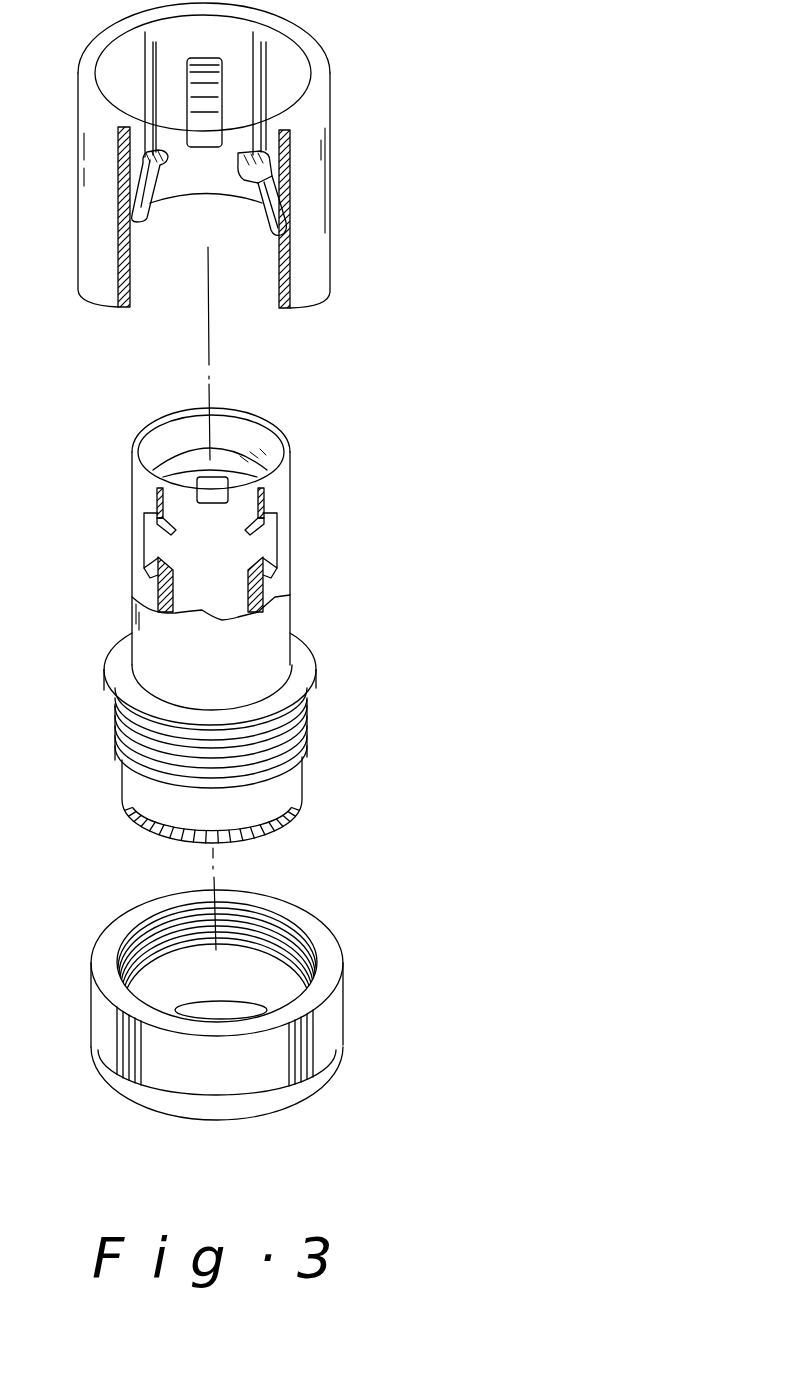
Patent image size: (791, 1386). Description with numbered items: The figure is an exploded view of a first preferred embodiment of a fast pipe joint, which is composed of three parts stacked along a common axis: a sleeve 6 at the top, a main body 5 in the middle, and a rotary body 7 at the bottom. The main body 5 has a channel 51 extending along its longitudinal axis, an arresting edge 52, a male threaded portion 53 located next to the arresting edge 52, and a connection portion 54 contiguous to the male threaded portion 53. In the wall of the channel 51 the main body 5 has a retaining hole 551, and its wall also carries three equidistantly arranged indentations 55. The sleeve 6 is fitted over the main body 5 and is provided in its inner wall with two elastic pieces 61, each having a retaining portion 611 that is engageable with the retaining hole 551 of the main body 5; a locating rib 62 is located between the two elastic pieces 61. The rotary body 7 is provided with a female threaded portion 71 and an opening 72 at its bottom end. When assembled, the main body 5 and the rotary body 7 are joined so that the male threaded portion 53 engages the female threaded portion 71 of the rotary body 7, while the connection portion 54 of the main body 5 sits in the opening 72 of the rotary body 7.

The main body 5 is at (250, 621).
The channel 51 is at (162, 452).
The arresting edge 52 is at (297, 678).
The male threaded portion 53 is at (312, 730).
The connection portion 54 is at (265, 833).
The indentations 55 is at (272, 545).
The retaining hole 551 is at (217, 490).
The sleeve 6 is at (229, 155).
The elastic pieces 61 is at (256, 215).
The retaining portion 611 is at (250, 158).
The locating rib 62 is at (273, 63).
The rotary body 7 is at (244, 1044).
The female threaded portion 71 is at (285, 948).
The opening 72 is at (222, 1017).